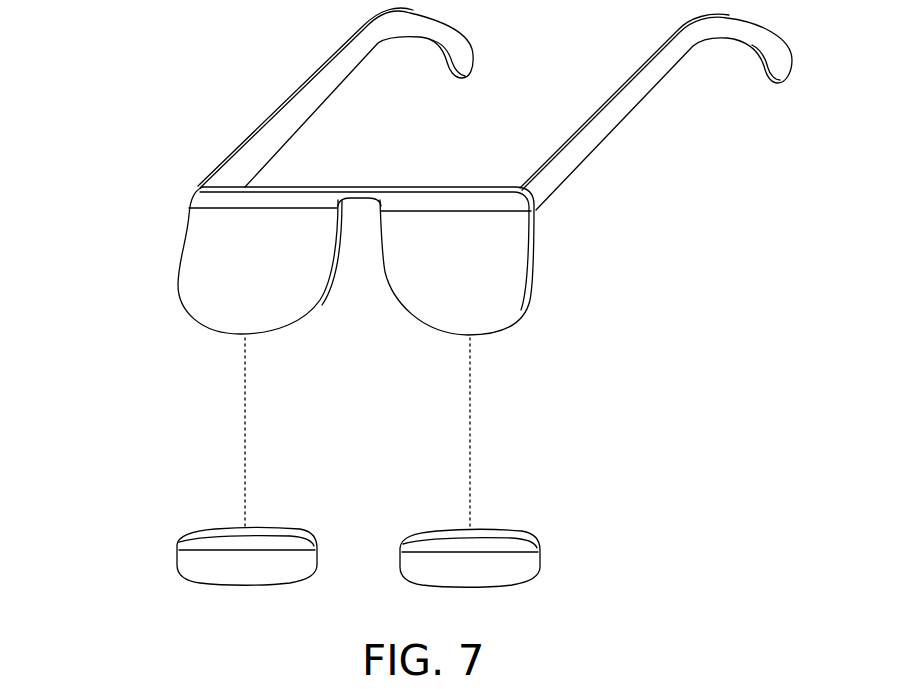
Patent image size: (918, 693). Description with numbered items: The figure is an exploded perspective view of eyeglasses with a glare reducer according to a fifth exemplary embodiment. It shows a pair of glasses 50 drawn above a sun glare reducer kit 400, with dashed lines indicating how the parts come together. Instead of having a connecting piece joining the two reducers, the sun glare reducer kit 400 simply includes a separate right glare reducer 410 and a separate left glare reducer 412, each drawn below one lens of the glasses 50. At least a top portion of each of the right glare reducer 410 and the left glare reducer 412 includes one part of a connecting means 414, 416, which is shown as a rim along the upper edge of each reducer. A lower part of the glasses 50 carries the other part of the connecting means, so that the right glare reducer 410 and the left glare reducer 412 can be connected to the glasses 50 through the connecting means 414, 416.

The glasses 50 is at (268, 118).
The sun glare reducer kit 400 is at (104, 516).
The right glare reducer 410 is at (187, 577).
The left glare reducer 412 is at (523, 583).
The connecting means 414 is at (223, 532).
The connecting means 416 is at (490, 530).